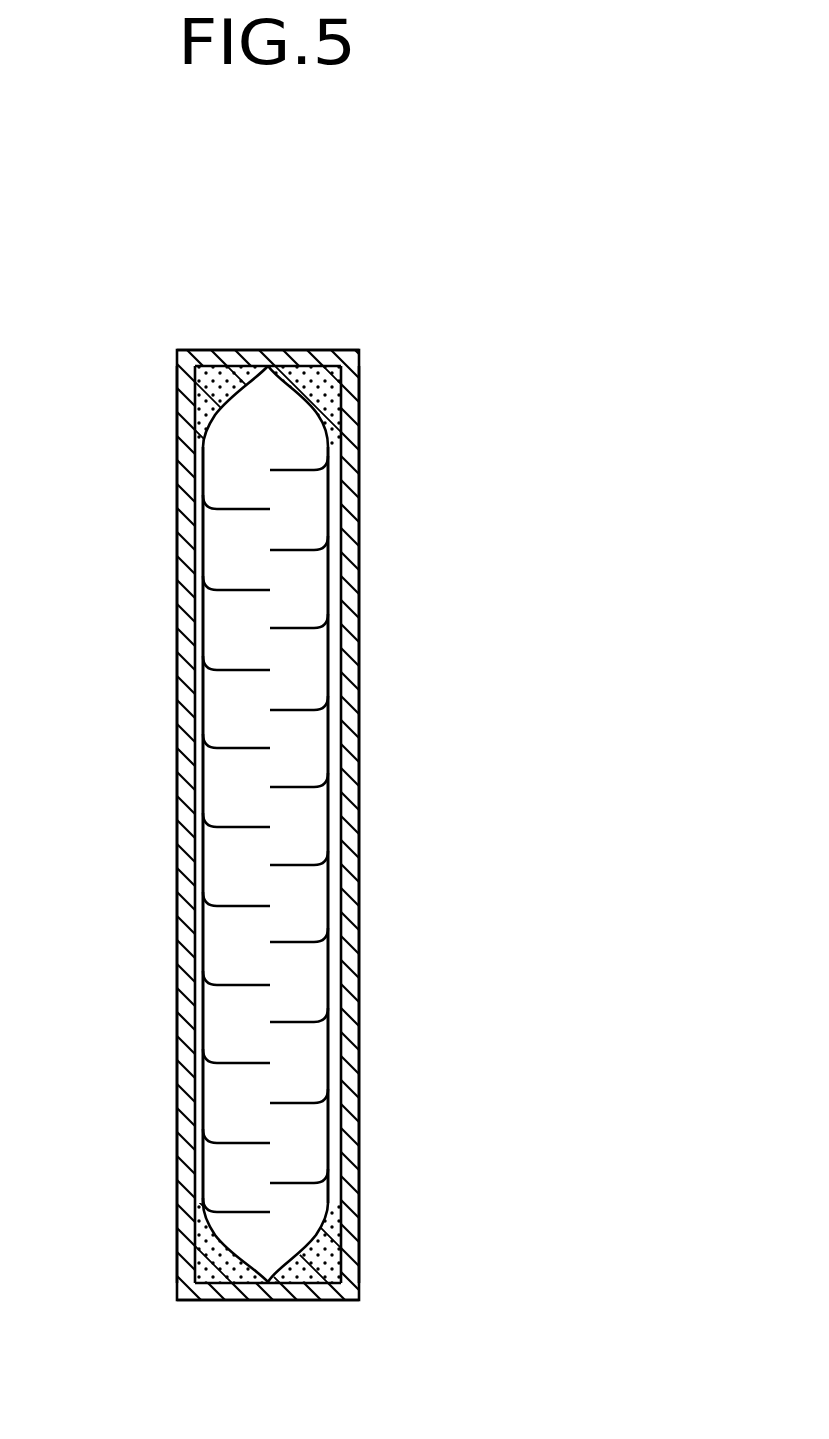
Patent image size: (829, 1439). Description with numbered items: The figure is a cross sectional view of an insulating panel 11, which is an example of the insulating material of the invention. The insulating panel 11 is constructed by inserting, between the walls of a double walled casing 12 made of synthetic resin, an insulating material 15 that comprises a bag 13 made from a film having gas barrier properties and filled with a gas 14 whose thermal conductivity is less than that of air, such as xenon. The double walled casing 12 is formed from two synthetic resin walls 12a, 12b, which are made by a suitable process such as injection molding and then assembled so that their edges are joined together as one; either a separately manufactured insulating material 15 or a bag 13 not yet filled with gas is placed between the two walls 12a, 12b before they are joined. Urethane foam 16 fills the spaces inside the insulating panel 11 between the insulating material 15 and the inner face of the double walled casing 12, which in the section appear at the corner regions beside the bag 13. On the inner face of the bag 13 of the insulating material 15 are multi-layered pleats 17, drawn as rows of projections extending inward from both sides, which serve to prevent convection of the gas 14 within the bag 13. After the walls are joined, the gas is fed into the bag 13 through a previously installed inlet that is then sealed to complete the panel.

The insulating panel 11 is at (391, 496).
The double walled casing 12 is at (343, 193).
The synthetic resin wall 12a is at (178, 365).
The synthetic resin wall 12b is at (236, 364).
The bag 13 is at (203, 528).
The gas 14 is at (230, 480).
The insulating material 15 is at (92, 432).
The urethane foam 16 is at (333, 1214).
The multi-layered pleats 17 is at (250, 827).